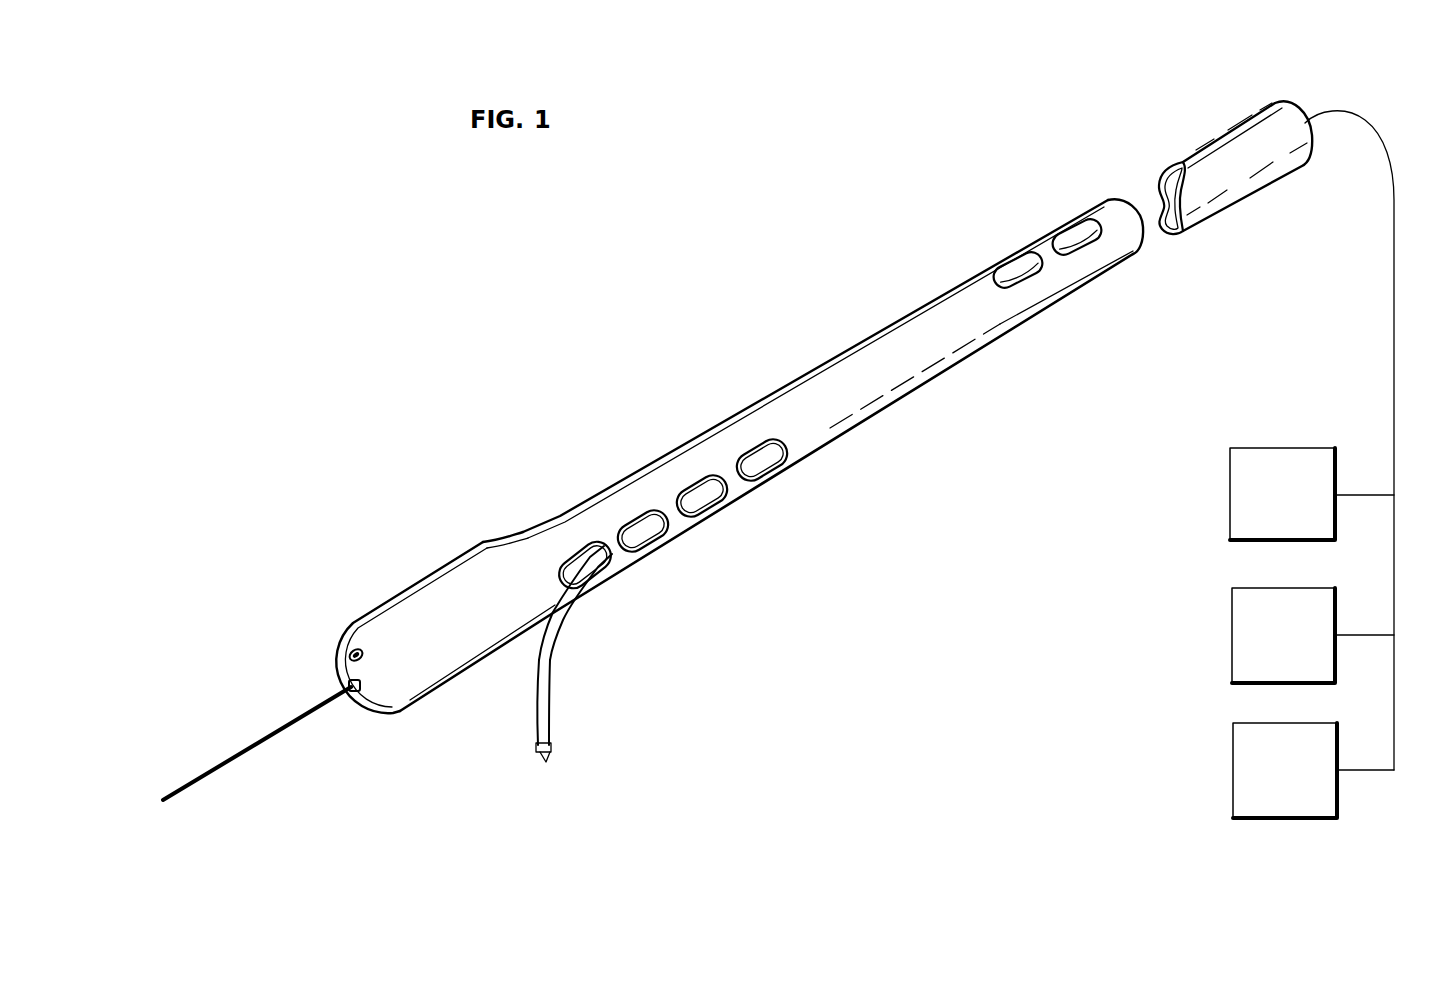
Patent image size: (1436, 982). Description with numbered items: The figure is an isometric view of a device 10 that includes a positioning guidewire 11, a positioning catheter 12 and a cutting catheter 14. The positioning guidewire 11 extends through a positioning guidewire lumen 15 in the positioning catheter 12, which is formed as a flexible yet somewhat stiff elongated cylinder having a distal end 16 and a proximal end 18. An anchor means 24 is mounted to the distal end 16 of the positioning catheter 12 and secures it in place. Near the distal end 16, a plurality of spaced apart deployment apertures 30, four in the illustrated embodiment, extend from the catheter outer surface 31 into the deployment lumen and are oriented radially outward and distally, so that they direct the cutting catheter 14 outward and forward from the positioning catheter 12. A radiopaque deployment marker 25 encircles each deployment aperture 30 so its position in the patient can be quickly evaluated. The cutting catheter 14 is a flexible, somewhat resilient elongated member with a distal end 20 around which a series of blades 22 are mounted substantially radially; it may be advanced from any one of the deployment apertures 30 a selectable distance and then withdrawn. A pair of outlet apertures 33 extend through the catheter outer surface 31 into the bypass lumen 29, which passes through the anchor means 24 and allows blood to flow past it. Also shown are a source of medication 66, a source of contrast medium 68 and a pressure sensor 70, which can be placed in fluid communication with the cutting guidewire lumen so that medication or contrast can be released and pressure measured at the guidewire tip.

The device 10 is at (701, 477).
The positioning guidewire 11 is at (222, 748).
The positioning catheter 12 is at (771, 432).
The cutting catheter 14 is at (557, 681).
The positioning guidewire lumen 15 is at (350, 692).
The distal end 16 is at (518, 528).
The proximal end 18 is at (1185, 160).
The distal end 20 is at (550, 707).
The blades 22 is at (545, 752).
The anchor means 24 is at (407, 663).
The radiopaque deployment marker 25 is at (708, 517).
The bypass lumen 29 is at (349, 656).
The deployment apertures 30 is at (698, 496).
The catheter outer surface 31 is at (815, 366).
The outlet apertures 33 is at (1017, 275).
The source of medication 66 is at (1239, 448).
The source of contrast medium 68 is at (1245, 588).
The pressure sensor 70 is at (1252, 723).